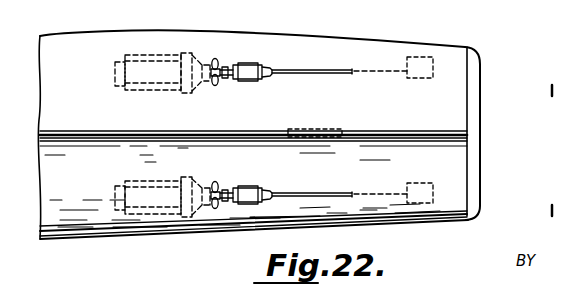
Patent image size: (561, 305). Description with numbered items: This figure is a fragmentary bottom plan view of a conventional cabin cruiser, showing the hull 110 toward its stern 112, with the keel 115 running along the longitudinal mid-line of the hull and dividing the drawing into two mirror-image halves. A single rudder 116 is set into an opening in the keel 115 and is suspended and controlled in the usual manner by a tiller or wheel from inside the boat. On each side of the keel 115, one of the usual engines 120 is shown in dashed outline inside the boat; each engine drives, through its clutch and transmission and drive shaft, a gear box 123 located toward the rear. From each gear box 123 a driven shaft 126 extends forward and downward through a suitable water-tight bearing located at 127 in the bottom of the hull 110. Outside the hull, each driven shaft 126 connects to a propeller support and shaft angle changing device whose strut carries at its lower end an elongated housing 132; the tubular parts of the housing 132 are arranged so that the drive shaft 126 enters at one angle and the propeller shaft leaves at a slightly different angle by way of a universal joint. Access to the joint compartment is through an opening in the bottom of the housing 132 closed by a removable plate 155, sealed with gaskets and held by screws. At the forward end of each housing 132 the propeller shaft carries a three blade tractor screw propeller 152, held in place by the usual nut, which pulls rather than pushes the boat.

The hull 110 is at (184, 121).
The stern 112 is at (474, 115).
The keel 115 is at (198, 131).
The rudder 116 is at (335, 130).
The engine 120 is at (145, 88).
The gear box 123 is at (413, 79).
The driven shaft 126 is at (305, 63).
The water-tight bearing 127 is at (355, 74).
The elongated housing 132 is at (268, 78).
The three blade tractor screw propeller 152 is at (217, 84).
The removable plate 155 is at (250, 80).